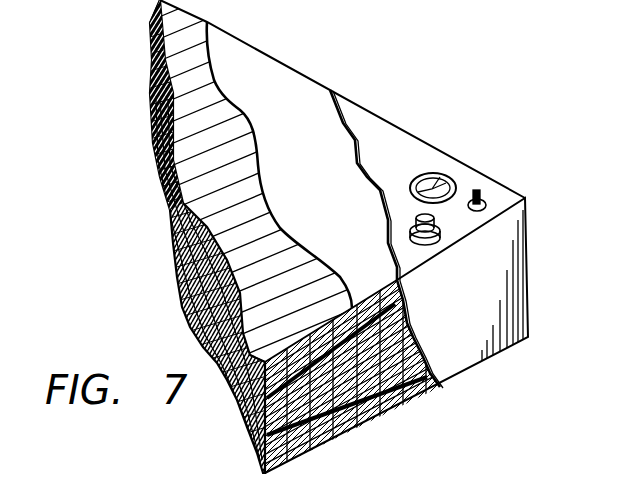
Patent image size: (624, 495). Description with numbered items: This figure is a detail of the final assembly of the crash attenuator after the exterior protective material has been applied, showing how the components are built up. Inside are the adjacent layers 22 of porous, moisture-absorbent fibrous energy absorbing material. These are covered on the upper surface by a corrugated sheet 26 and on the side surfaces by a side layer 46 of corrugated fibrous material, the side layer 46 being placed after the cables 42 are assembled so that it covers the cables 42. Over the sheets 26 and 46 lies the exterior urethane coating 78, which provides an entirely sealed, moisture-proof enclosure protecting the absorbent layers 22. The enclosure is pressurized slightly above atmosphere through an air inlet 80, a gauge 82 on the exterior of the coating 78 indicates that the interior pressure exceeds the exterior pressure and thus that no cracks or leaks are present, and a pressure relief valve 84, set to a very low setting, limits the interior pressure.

The layers of energy absorbing material 22 is at (183, 98).
The corrugated sheet 26 is at (304, 136).
The cables 42 is at (327, 350).
The side layer of corrugated fibrous material 46 is at (400, 349).
The exterior urethane coating 78 is at (404, 167).
The air inlet 80 is at (483, 188).
The gauge 82 is at (443, 177).
The pressure relief valve 84 is at (440, 240).